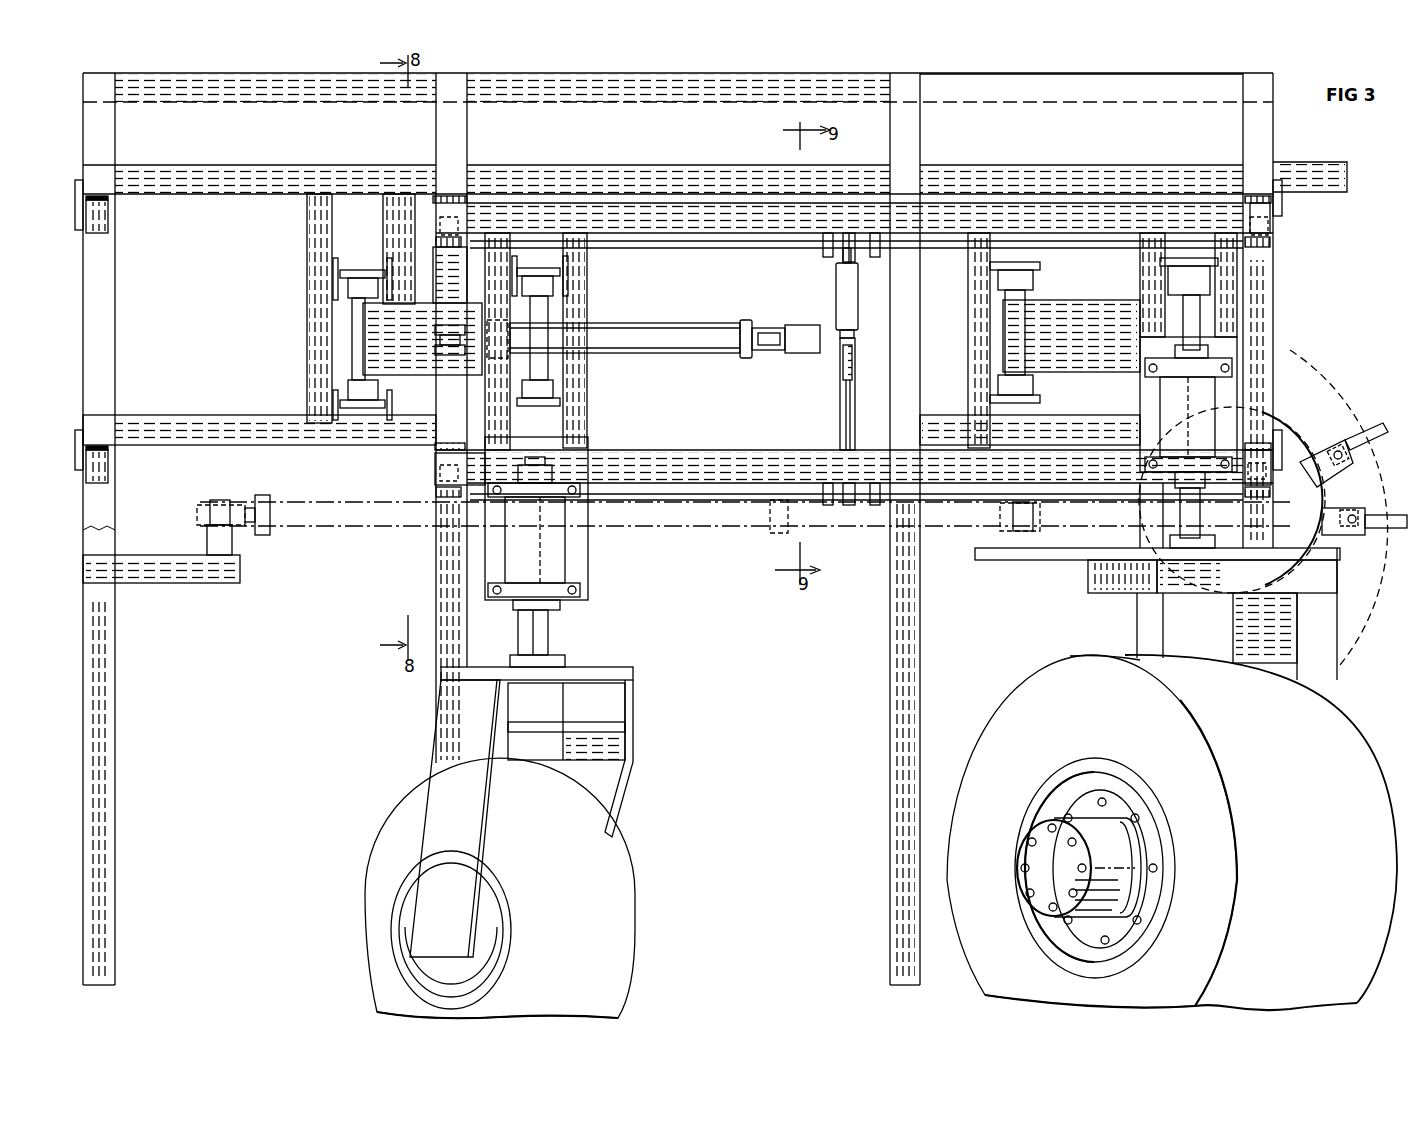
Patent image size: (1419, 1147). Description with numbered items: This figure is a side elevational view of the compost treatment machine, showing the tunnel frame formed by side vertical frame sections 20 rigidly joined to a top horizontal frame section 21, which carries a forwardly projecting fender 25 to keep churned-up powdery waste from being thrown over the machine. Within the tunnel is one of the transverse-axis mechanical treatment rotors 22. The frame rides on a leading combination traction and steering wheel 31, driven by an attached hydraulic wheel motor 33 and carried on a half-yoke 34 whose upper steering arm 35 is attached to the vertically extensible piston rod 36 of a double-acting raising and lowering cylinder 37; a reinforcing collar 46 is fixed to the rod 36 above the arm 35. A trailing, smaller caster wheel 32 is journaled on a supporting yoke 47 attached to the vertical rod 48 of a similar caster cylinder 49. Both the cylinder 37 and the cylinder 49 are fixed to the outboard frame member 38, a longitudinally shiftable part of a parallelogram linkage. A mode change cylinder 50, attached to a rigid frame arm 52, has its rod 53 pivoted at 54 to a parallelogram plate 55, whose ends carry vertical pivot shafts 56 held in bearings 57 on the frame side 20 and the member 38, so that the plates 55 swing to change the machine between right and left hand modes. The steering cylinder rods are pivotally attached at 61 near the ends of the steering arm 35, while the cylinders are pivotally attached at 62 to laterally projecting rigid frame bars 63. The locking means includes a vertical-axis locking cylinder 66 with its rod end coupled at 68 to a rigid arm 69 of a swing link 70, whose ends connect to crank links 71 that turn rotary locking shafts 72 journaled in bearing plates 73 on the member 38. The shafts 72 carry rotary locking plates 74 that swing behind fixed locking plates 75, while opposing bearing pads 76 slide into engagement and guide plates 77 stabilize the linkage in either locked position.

The side vertical frame section 20 is at (285, 185).
The top horizontal frame section 21 is at (990, 102).
The mechanical treatment rotor 22 is at (1292, 466).
The fender 25 is at (1327, 165).
The combination traction and steering wheel 31 is at (1358, 812).
The caster wheel 32 is at (628, 883).
The hydraulic wheel motor 33 is at (1020, 845).
The half-yoke 34 is at (1326, 612).
The steering arm 35 is at (1240, 567).
The piston rod 36 is at (1180, 508).
The raising and lowering cylinder 37 is at (1188, 383).
The outboard frame member 38 is at (1097, 213).
The reinforcing collar 46 is at (1208, 538).
The supporting yoke 47 is at (633, 698).
The vertical rod 48 is at (548, 635).
The caster cylinder 49 is at (549, 552).
The mode change cylinder 50 is at (680, 330).
The rigid frame arm 52 is at (834, 354).
The rod 53 is at (484, 320).
The pivot 54 is at (435, 341).
The parallelogram plate 55 is at (400, 375).
The vertical pivot shaft 56 is at (352, 337).
The bearing 57 is at (348, 284).
The pivotal attachment 61 is at (1000, 514).
The pivotal attachment 62 is at (210, 504).
The rigid frame bar 63 is at (173, 583).
The locking cylinder 66 is at (836, 287).
The rod end coupling 68 is at (856, 354).
The rigid arm 69 is at (854, 385).
The swing link 70 is at (840, 428).
The crank link 71 is at (849, 233).
The rotary locking shaft 72 is at (760, 250).
The bearing plate 73 is at (462, 252).
The rotary locking plate 74 is at (466, 225).
The fixed locking plate 75 is at (100, 228).
The bearing pad 76 is at (100, 203).
The guide plate 77 is at (79, 228).